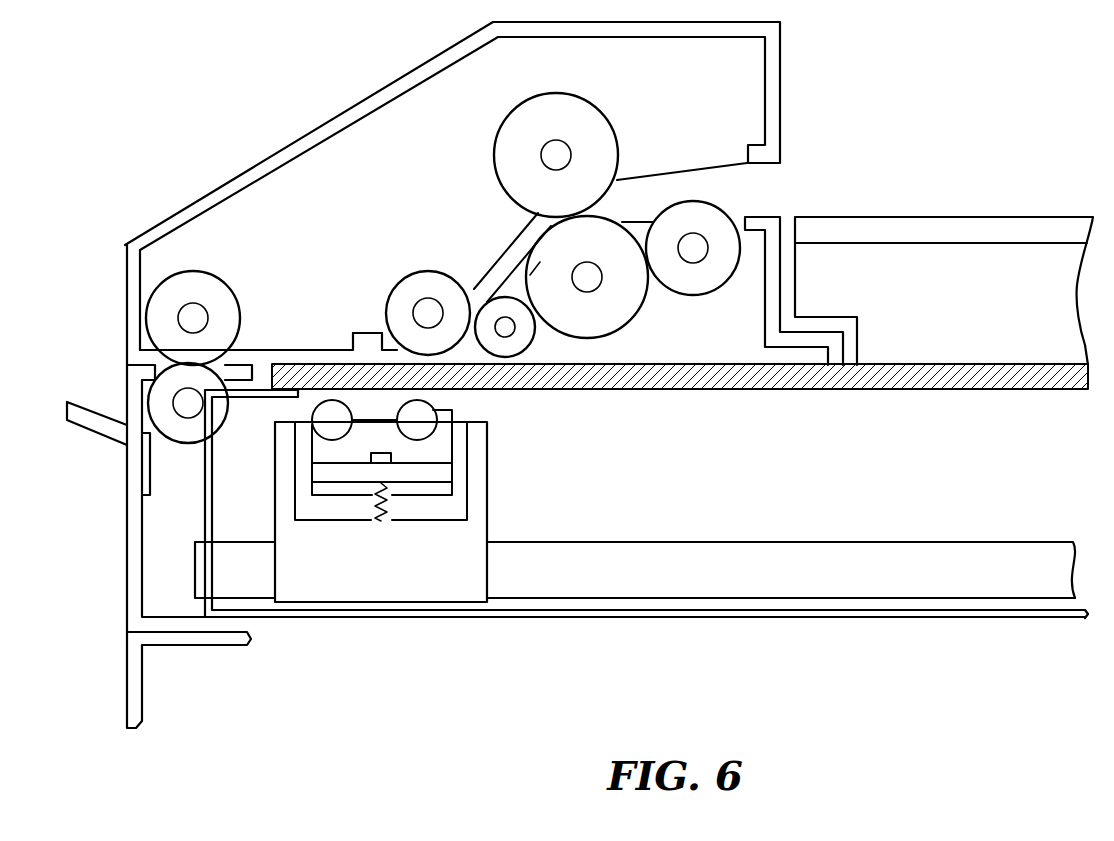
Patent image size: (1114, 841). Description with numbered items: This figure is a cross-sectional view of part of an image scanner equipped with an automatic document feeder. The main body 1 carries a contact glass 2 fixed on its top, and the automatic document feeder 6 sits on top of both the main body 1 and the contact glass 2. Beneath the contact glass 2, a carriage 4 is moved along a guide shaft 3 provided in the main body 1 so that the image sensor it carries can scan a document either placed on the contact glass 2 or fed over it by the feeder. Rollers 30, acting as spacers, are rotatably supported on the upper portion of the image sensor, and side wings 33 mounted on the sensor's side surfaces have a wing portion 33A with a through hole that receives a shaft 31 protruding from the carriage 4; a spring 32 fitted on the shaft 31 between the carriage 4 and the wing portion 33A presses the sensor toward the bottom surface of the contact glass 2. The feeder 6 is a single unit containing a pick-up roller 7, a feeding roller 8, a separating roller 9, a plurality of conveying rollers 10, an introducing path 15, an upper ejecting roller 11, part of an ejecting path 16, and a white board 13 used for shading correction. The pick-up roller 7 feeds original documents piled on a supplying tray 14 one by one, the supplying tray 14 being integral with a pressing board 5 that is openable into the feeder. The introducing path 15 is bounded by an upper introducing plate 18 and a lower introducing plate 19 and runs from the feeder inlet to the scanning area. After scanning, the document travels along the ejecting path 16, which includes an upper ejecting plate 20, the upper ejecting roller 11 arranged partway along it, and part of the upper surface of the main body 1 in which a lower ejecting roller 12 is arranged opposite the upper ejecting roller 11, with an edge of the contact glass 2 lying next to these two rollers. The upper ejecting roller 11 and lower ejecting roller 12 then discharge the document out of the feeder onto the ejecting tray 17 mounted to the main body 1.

The main body 1 is at (127, 680).
The contact glass 2 is at (1042, 380).
The guide shaft 3 is at (668, 580).
The carriage 4 is at (415, 590).
The pressing board 5 is at (963, 258).
The automatic document feeder (ADF) 6 is at (388, 82).
The pick-up roller 7 is at (727, 208).
The feeding roller 8 is at (628, 322).
The separating roller 9 is at (586, 103).
The conveying rollers 10 is at (398, 280).
The upper ejecting roller 11 is at (230, 286).
The lower ejecting roller 12 is at (157, 397).
The white board 13 is at (350, 340).
The supplying tray 14 is at (876, 217).
The introducing path 15 is at (527, 280).
The ejecting path 16 is at (268, 357).
The ejecting tray 17 is at (93, 433).
The upper introducing plate 18 is at (678, 168).
The lower introducing plate 19 is at (640, 228).
The upper ejecting plate 20 is at (312, 347).
The rollers 30 is at (432, 405).
The shaft 31 is at (392, 505).
The spring 32 is at (378, 522).
The side wings 33 is at (452, 481).
The wing portion 33A is at (452, 466).